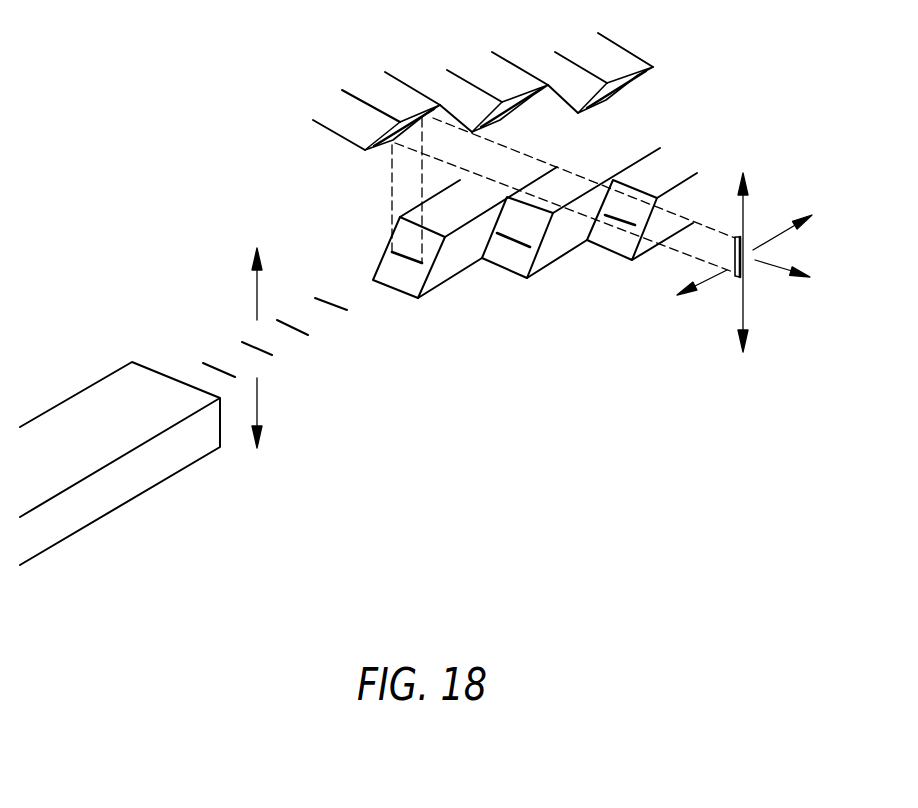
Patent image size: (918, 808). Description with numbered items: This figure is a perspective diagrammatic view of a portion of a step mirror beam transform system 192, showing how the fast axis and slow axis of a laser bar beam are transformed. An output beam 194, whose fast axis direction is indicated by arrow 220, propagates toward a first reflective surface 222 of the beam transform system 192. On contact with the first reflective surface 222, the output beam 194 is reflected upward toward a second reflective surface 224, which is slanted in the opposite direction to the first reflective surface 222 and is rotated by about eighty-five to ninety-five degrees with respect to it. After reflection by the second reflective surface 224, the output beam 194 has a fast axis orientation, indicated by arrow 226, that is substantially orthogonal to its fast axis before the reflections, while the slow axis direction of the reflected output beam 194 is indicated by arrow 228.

The step mirror beam transform system 192 is at (547, 330).
The output beam 194 is at (272, 355).
The arrow indicating fast axis direction 220 is at (253, 297).
The first reflective surface 222 is at (413, 286).
The second reflective surface 224 is at (383, 143).
The arrow indicating fast axis orientation 226 is at (772, 240).
The arrow indicating slow axis direction 228 is at (707, 282).